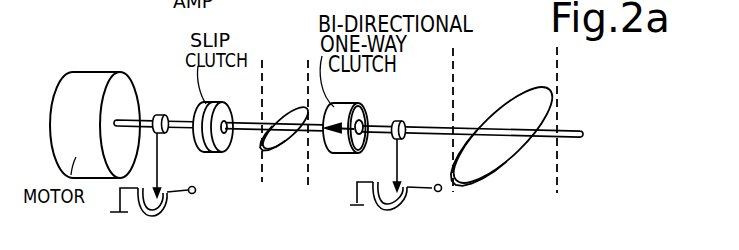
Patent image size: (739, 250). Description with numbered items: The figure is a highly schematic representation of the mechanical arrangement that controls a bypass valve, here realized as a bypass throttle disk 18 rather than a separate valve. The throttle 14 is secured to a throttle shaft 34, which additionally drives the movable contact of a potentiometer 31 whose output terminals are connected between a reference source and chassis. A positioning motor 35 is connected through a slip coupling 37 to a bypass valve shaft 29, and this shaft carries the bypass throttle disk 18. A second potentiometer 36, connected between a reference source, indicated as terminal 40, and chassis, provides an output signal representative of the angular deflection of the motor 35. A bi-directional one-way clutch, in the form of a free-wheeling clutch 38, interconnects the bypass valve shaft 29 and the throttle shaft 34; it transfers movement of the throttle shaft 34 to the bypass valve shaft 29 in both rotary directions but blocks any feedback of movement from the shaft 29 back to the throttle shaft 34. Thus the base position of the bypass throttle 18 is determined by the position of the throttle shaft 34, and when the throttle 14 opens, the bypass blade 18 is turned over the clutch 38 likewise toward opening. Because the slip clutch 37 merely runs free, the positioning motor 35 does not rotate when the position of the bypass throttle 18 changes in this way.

The positioning motor 35 is at (128, 88).
The bypass valve shaft 29 is at (248, 131).
The throttle shaft 34 is at (572, 140).
The bypass throttle disk 18 is at (287, 141).
The slip coupling 37 is at (208, 102).
The free-wheeling clutch 38 is at (338, 107).
The potentiometer 36 is at (158, 208).
The terminal 40 is at (196, 193).
The potentiometer 31 is at (399, 200).
The throttle 14 is at (503, 164).